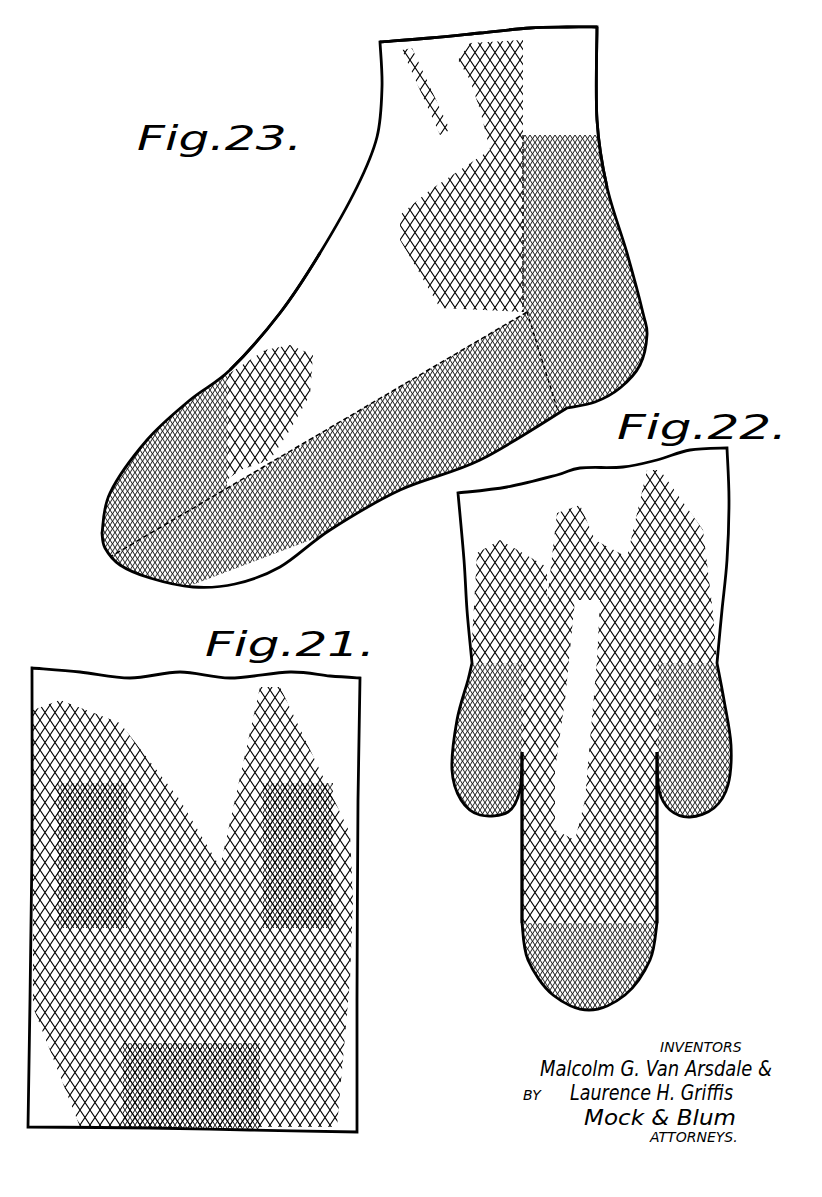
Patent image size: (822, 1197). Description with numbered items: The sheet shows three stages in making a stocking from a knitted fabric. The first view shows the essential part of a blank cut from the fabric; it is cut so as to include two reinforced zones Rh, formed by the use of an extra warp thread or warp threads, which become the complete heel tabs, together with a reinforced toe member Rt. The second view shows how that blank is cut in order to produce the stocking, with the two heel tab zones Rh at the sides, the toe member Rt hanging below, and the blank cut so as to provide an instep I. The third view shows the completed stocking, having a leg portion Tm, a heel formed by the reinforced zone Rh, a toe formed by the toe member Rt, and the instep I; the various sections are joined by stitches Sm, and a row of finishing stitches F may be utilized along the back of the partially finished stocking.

In FIG. 23, the reinforced zone Rh is at (577, 202).
In FIG. 22, the reinforced zone Rh is at (482, 713).
In FIG. 21, the reinforced zone Rh is at (78, 806).
In FIG. 23, the toe member Rt is at (140, 461).
In FIG. 22, the toe member Rt is at (577, 977).
In FIG. 21, the toe member Rt is at (174, 1105).
In FIG. 23, the stitches Sm is at (386, 396).
In FIG. 23, the leg portion Tm is at (390, 90).
In FIG. 23, the finishing stitches F is at (597, 103).
In FIG. 23, the instep I is at (287, 318).
In FIG. 22, the instep I is at (590, 807).